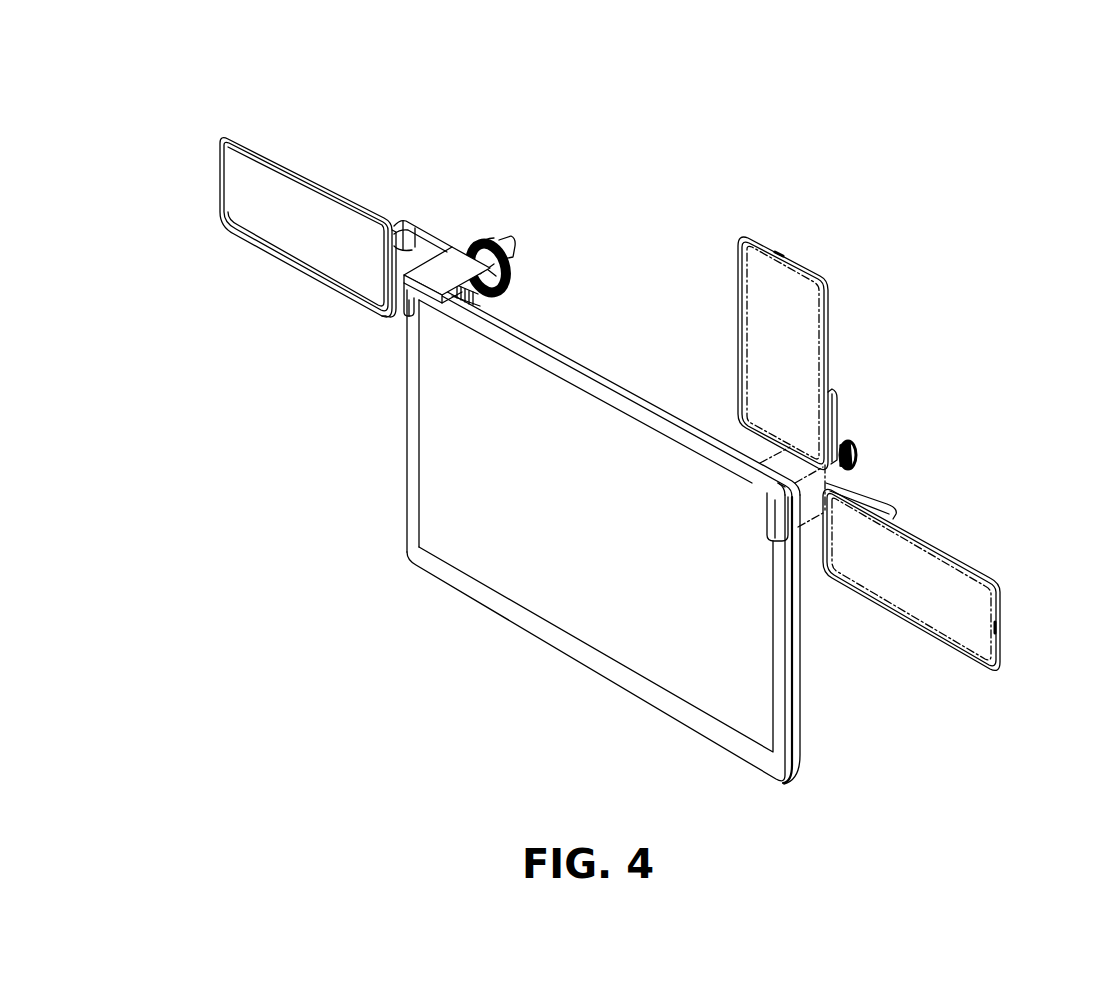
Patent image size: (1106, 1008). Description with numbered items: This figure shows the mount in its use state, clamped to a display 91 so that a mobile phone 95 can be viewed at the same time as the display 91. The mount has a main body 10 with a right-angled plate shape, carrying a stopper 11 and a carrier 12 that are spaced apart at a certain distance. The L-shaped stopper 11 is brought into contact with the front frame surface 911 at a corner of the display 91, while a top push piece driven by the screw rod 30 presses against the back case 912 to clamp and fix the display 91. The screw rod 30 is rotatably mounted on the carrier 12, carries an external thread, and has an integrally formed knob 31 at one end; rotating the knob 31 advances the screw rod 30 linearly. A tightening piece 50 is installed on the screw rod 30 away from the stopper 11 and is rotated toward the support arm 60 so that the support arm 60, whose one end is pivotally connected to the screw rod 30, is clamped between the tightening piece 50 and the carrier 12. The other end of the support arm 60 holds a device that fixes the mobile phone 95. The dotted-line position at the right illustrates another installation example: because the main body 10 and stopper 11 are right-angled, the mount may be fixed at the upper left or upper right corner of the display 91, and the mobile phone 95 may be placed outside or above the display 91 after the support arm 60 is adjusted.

The main body 10 is at (433, 268).
The stopper 11 is at (405, 313).
The carrier 12 is at (489, 241).
The screw rod 30 is at (490, 306).
The knob 31 is at (509, 242).
The tightening piece 50 is at (512, 283).
The support arm 60 is at (427, 250).
The display 91 is at (791, 630).
The front frame surface 911 is at (417, 437).
The back case 912 is at (647, 403).
The mobile phone 95 is at (270, 190).